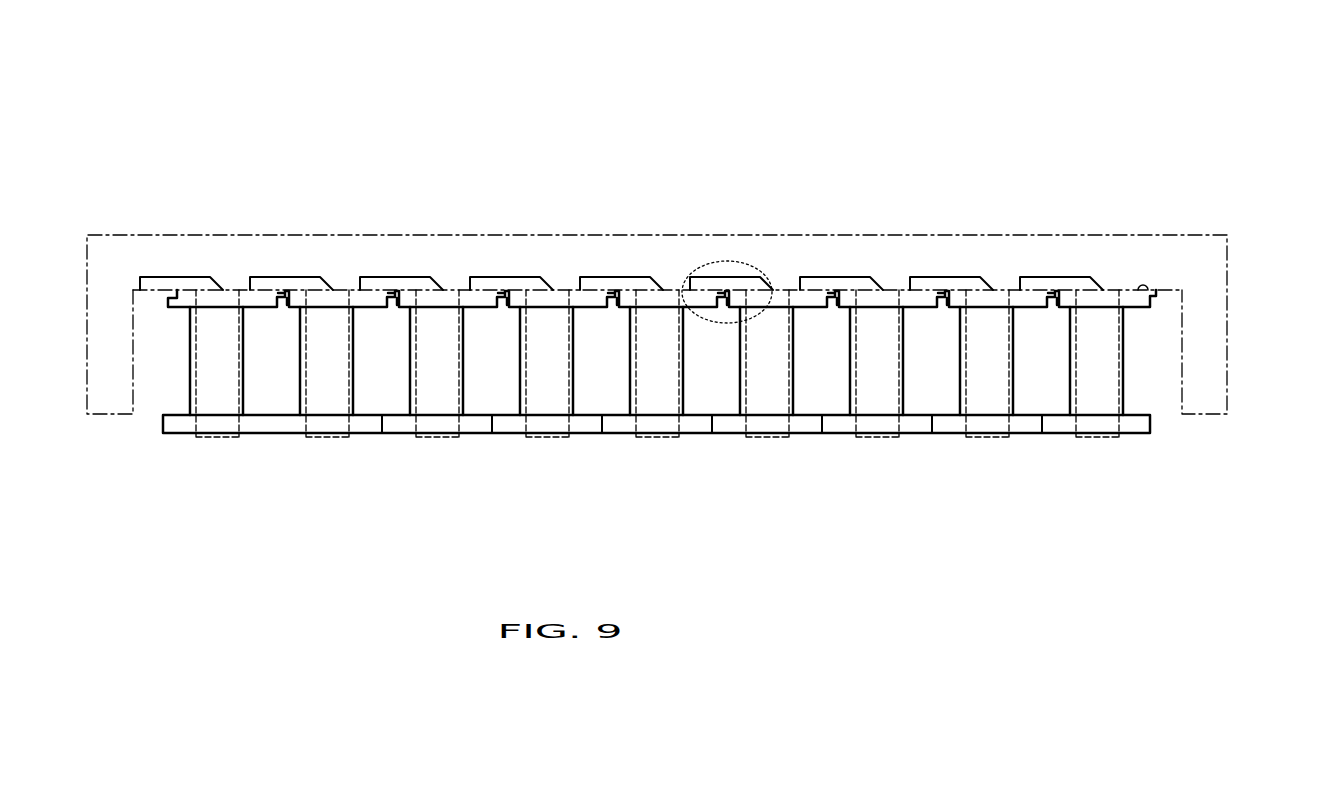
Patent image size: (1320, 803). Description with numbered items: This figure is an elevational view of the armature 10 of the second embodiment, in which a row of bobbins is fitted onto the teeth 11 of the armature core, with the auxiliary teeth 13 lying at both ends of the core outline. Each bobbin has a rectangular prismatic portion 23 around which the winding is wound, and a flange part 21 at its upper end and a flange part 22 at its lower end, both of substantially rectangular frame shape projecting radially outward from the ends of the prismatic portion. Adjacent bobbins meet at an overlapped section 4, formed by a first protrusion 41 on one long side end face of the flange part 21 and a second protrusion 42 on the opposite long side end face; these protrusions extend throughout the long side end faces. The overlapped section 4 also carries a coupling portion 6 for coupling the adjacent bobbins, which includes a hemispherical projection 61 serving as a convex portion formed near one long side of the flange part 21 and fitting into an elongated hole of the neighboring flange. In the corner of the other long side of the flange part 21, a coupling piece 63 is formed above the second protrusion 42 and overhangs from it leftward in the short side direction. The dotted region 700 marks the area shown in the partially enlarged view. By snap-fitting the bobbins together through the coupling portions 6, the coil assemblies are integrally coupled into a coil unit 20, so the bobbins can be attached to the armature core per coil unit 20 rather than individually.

The armature 10 is at (922, 80).
The auxiliary teeth 13 is at (1227, 374).
The flange part 21 is at (230, 286).
The coupling piece 63 is at (163, 277).
The coupling portion 6 is at (267, 268).
The partially enlarged view region 700 is at (745, 256).
The hemispherical projection 61 is at (1143, 283).
The rectangular prismatic portion 23 is at (1122, 362).
The teeth 11 is at (543, 438).
The coil unit 20 is at (850, 446).
The flange part 22 is at (403, 442).
The first protrusion 41 is at (274, 293).
The second protrusion 42 is at (284, 308).
The overlapped section 4 is at (272, 330).